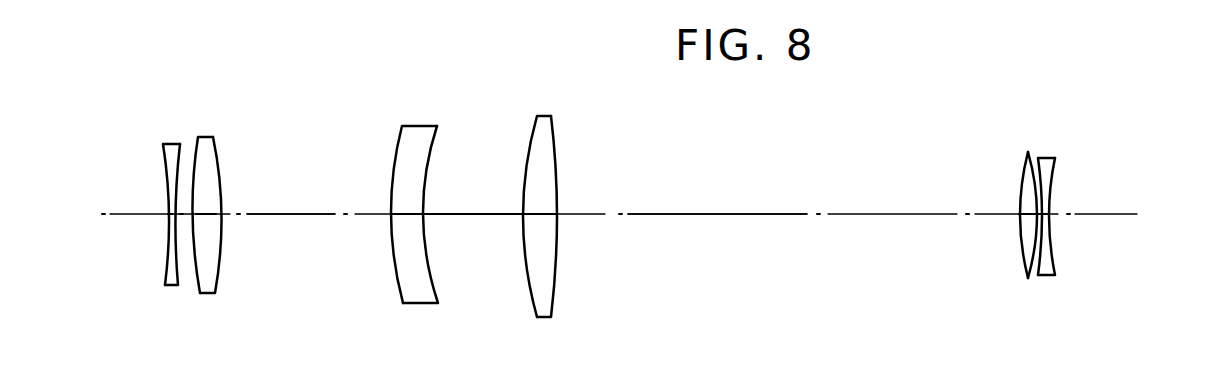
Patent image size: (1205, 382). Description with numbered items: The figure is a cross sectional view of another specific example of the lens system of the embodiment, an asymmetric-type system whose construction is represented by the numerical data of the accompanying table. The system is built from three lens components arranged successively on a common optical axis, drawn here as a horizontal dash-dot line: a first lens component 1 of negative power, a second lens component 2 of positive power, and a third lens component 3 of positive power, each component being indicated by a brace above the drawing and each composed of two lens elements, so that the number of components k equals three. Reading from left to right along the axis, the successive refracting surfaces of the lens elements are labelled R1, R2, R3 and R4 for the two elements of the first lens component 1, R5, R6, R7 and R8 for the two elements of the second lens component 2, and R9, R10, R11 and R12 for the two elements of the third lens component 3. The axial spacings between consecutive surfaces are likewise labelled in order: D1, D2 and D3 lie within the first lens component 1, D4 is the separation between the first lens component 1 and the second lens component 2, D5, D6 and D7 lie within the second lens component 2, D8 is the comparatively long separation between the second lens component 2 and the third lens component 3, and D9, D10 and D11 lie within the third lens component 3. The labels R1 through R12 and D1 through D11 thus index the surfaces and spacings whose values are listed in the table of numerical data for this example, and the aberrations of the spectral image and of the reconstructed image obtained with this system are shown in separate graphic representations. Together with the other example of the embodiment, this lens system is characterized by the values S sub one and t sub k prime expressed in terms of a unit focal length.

The first lens component 1 is at (238, 74).
The second lens component 2 is at (402, 74).
The third lens component 3 is at (1107, 74).
The first lens surface R1 is at (165, 270).
The second lens surface R2 is at (182, 273).
The third lens surface R3 is at (200, 283).
The fourth lens surface R4 is at (218, 286).
The fifth lens surface R5 is at (400, 290).
The sixth lens surface R6 is at (437, 290).
The seventh lens surface R7 is at (532, 292).
The eighth lens surface R8 is at (555, 293).
The ninth lens surface R9 is at (1023, 263).
The tenth lens surface R10 is at (1028, 280).
The eleventh lens surface R11 is at (1043, 277).
The twelfth lens surface R12 is at (1057, 267).
The first lens thickness D1 is at (170, 214).
The first air gap D2 is at (183, 213).
The second lens thickness D3 is at (207, 213).
The air gap between first and second groups D4 is at (307, 213).
The third lens thickness D5 is at (405, 213).
The air gap between third and fourth lenses D6 is at (473, 213).
The fourth lens thickness D7 is at (542, 213).
The air gap between second and third groups D8 is at (775, 213).
The fifth lens thickness D9 is at (1025, 213).
The air gap between fifth and sixth lenses D10 is at (1040, 213).
The sixth lens thickness D11 is at (1046, 213).